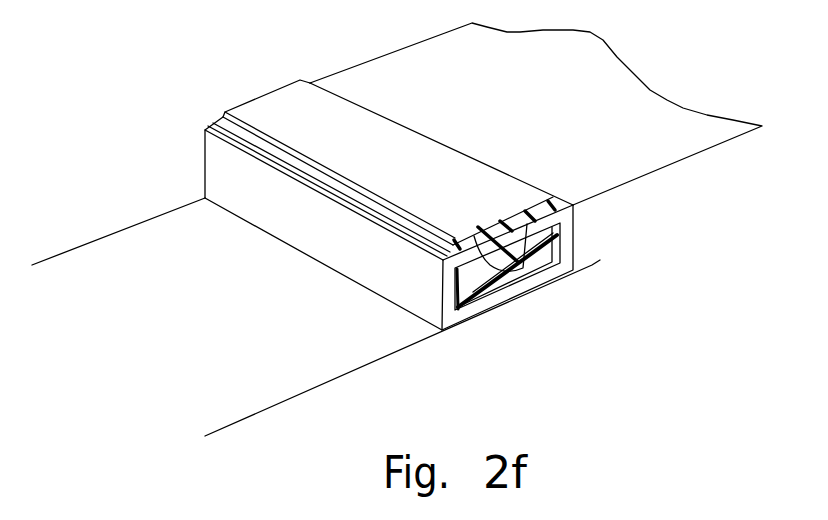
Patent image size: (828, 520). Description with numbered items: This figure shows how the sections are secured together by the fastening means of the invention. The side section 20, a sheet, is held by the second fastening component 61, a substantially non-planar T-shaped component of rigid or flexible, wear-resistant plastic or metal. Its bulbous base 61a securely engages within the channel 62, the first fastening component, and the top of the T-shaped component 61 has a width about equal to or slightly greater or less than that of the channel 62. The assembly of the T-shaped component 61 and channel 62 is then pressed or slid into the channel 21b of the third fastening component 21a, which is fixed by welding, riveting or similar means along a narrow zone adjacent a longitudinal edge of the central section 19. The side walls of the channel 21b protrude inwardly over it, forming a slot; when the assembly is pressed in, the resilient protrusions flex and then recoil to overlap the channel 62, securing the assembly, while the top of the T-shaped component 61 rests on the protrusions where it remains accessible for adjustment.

The base substrate 19 is at (242, 317).
The side section 20 is at (525, 119).
The second fastening component 61 is at (280, 107).
The bulbous base 61a is at (557, 225).
The channel 62 is at (488, 282).
The third fastening component 21a is at (557, 245).
The channel 21b is at (458, 307).